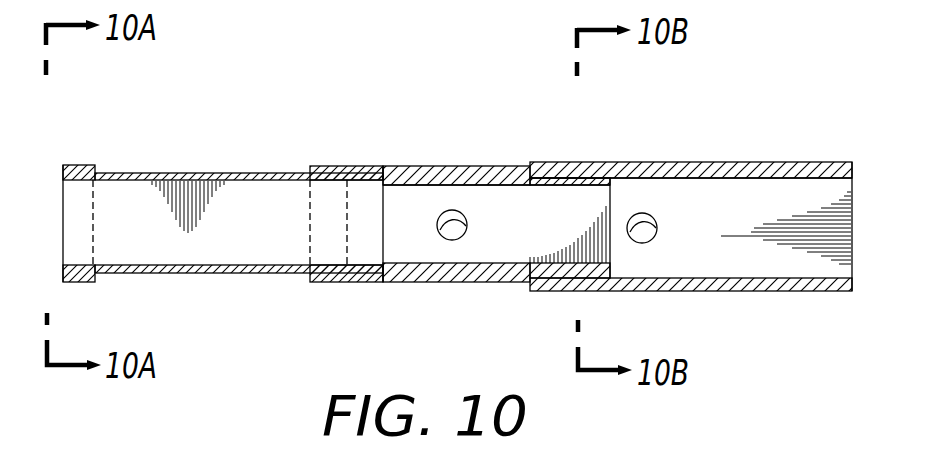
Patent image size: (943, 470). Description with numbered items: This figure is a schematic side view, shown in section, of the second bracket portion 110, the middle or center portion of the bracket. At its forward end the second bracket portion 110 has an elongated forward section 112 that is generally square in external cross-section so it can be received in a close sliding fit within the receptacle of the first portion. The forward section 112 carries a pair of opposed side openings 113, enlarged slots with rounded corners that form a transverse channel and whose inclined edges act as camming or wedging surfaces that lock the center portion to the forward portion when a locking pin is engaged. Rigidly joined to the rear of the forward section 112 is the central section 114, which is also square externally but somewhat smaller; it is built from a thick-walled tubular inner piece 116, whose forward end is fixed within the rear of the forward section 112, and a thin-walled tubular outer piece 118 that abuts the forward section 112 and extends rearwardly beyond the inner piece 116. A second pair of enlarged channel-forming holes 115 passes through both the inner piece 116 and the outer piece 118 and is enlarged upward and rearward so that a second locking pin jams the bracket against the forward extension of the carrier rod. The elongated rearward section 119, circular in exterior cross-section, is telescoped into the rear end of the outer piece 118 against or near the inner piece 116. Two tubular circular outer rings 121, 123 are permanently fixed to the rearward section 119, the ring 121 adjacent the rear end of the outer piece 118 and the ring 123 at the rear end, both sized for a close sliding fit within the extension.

The second bracket portion 110 is at (662, 162).
The forward section 112 is at (748, 163).
The side openings 113 is at (633, 212).
The central section 114 is at (448, 166).
The channel-forming holes 115 is at (442, 238).
The tubular inner piece 116 is at (485, 188).
The tubular outer piece 118 is at (360, 166).
The rearward section 119 is at (198, 173).
The outer ring 121 is at (325, 166).
The outer ring 123 is at (78, 165).